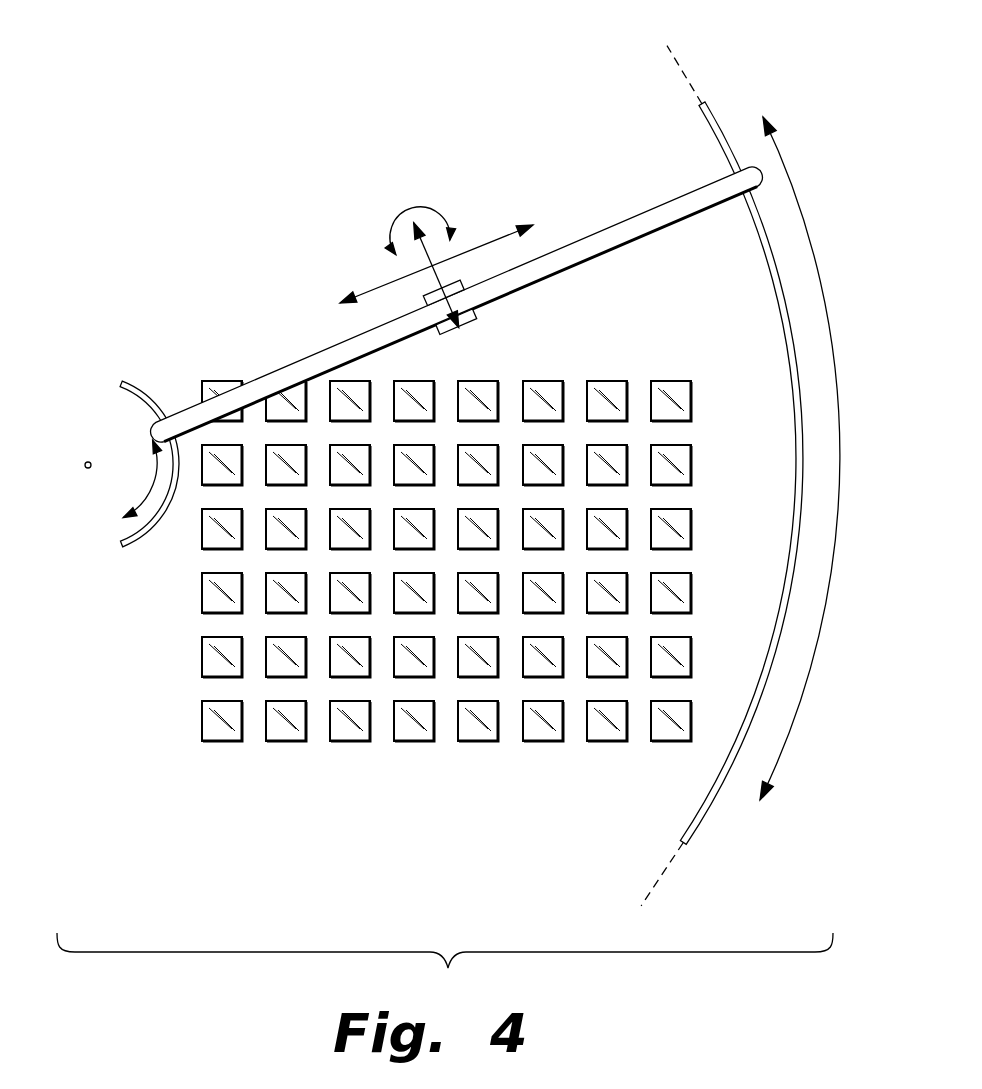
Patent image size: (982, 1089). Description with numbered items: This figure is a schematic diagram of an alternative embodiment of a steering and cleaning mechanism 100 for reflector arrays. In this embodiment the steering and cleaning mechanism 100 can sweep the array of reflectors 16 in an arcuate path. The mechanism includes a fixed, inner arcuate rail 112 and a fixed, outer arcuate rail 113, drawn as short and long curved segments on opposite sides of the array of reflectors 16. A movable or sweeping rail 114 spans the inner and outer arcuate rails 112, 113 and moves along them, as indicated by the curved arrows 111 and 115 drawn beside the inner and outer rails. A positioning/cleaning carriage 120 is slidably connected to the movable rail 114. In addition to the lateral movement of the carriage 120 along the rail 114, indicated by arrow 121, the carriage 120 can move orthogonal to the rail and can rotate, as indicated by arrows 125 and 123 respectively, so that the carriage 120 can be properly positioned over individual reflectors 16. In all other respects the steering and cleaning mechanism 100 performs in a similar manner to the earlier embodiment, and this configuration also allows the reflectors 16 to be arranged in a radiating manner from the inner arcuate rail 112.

The steering and cleaning mechanism 100 is at (461, 88).
The reflectors 16 is at (342, 741).
The arrow 111 is at (147, 488).
The inner arcuate rail 112 is at (142, 548).
The outer arcuate rail 113 is at (700, 828).
The movable rail 114 is at (670, 228).
The arrow 115 is at (820, 645).
The positioning/cleaning carriage 120 is at (501, 327).
The arrow 121 is at (491, 240).
The arrow 123 is at (430, 208).
The arrow 125 is at (392, 262).